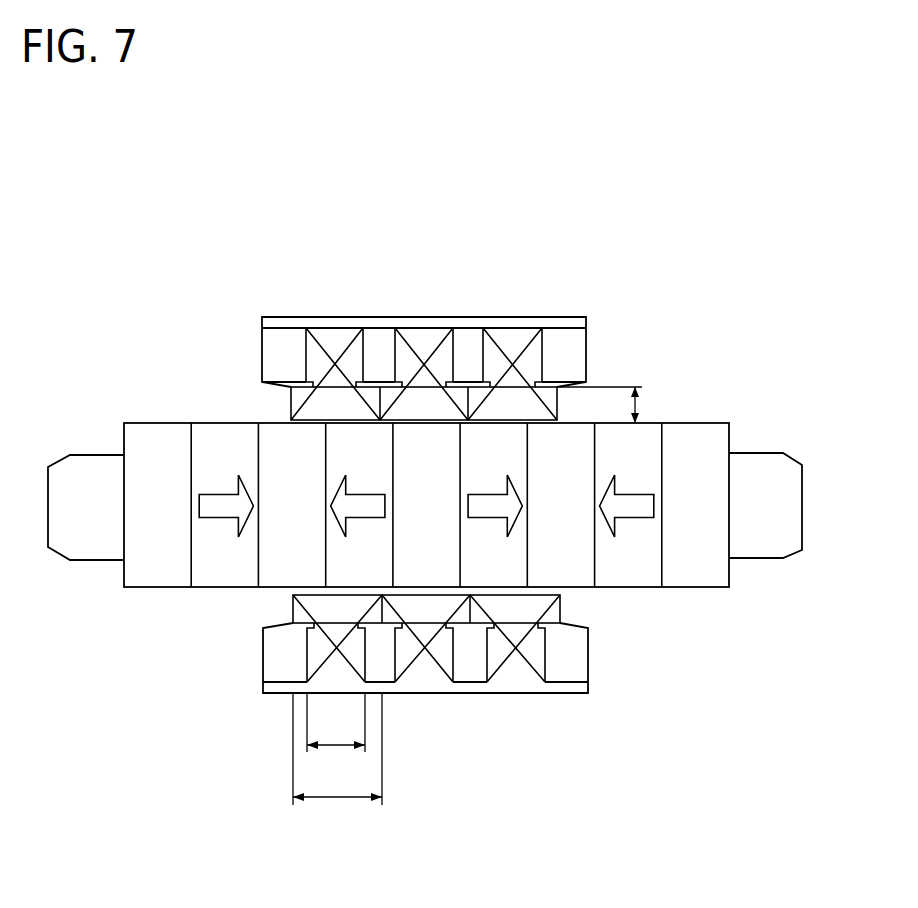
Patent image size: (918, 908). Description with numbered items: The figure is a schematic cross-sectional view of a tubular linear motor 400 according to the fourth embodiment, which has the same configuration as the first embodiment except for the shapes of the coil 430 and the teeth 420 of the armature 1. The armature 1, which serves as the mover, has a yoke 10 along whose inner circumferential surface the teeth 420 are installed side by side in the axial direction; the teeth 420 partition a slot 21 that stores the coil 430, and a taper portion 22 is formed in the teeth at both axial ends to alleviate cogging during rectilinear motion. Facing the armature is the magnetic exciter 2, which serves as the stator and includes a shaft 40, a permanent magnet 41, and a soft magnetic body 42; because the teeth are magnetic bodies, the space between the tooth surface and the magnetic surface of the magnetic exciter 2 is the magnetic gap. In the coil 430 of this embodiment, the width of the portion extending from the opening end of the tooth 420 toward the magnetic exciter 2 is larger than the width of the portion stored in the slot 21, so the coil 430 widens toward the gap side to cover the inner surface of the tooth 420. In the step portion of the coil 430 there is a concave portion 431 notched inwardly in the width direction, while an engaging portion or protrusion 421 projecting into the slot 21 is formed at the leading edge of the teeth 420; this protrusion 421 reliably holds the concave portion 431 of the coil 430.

The tubular linear motor 400 is at (173, 202).
The armature 1 is at (395, 313).
The yoke 10 is at (502, 318).
The teeth 420 is at (376, 338).
The coil 430 is at (422, 343).
The magnetic exciter 2 is at (158, 420).
The shaft 40 is at (87, 477).
The permanent magnet 41 is at (362, 568).
The soft magnetic body 42 is at (560, 575).
The slot 21 is at (490, 657).
The taper portion 22 is at (293, 625).
The engaging portion (protrusion) 421 is at (545, 612).
The concave portion 431 is at (535, 672).